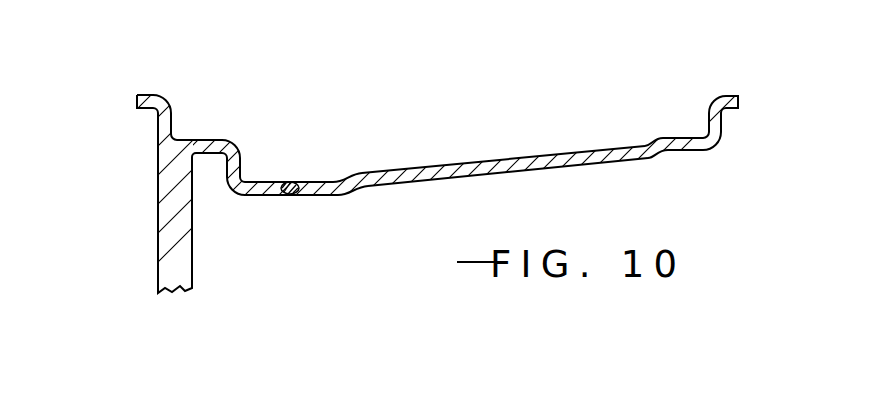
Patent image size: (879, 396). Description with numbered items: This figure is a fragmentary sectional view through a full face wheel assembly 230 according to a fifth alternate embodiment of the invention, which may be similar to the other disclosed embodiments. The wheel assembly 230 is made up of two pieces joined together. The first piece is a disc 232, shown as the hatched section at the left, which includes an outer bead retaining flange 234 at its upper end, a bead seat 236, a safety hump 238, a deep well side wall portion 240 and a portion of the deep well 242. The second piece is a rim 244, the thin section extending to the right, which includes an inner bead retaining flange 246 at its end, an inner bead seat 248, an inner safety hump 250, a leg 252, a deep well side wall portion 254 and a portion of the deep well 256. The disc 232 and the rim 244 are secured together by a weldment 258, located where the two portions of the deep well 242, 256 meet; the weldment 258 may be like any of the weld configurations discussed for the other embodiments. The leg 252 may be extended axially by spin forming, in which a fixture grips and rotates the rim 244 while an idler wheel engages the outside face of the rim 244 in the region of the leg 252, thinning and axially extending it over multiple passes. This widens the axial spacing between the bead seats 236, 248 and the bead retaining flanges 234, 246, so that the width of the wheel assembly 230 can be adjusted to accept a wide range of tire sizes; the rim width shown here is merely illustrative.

The full face wheel assembly 230 is at (478, 93).
The disc 232 is at (158, 203).
The outer bead retaining flange 234 is at (147, 94).
The bead seat 236 is at (185, 138).
The safety hump 238 is at (225, 139).
The deep well side wall portion 240 is at (244, 163).
The portion of the deep well 242 is at (265, 181).
The rim 244 is at (702, 162).
The inner bead retaining flange 246 is at (724, 95).
The inner bead seat 248 is at (679, 137).
The inner safety hump 250 is at (652, 137).
The leg 252 is at (455, 171).
The deep well side wall portion 254 is at (374, 188).
The portion of the deep well 256 is at (329, 180).
The weldment 258 is at (288, 196).